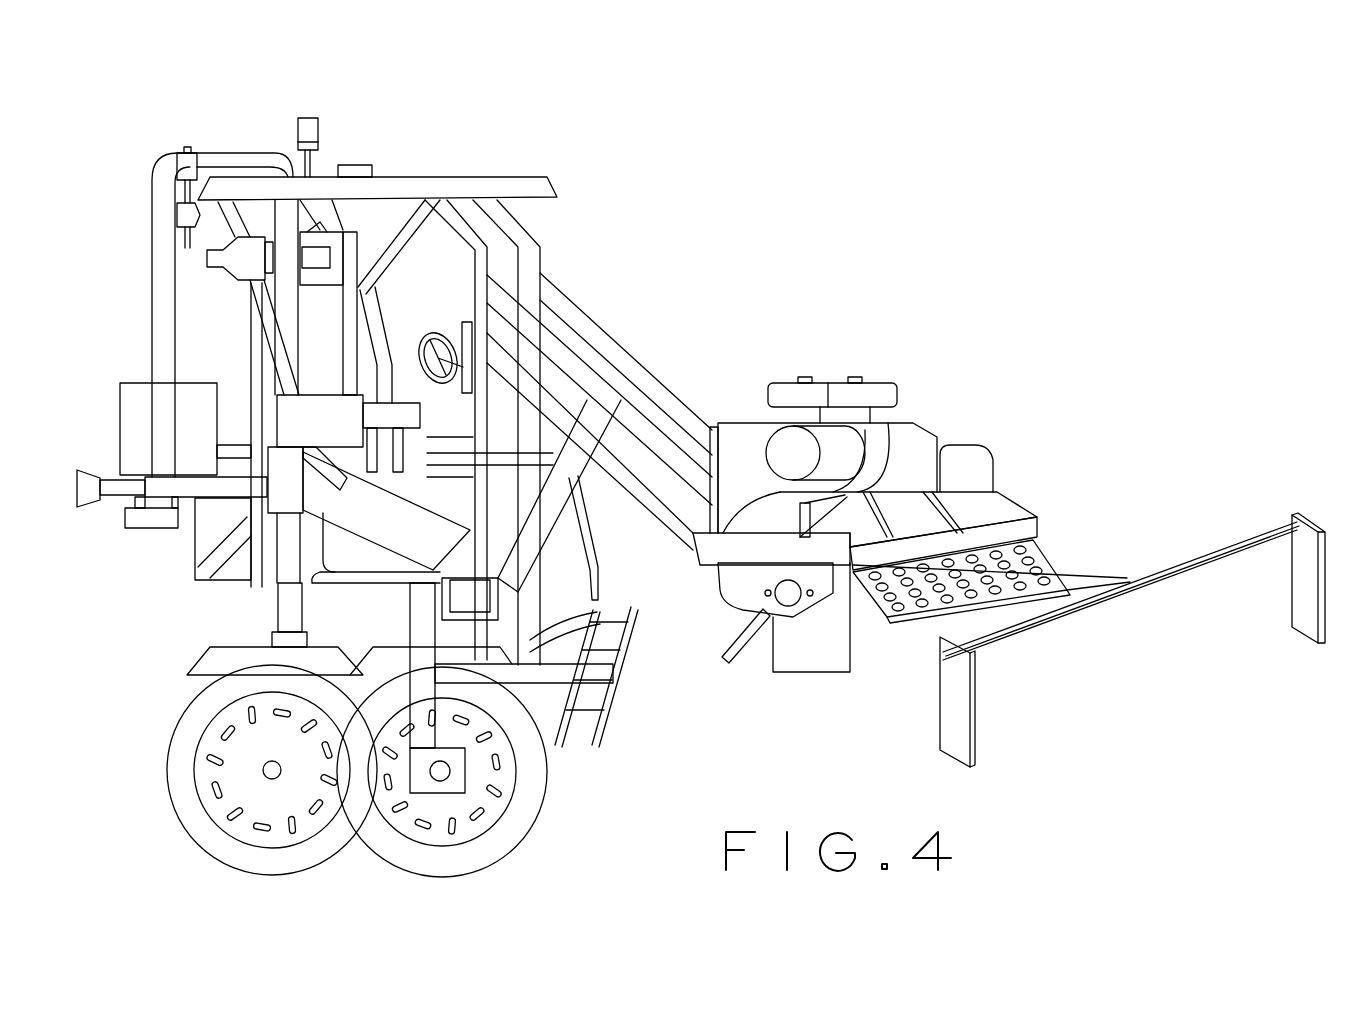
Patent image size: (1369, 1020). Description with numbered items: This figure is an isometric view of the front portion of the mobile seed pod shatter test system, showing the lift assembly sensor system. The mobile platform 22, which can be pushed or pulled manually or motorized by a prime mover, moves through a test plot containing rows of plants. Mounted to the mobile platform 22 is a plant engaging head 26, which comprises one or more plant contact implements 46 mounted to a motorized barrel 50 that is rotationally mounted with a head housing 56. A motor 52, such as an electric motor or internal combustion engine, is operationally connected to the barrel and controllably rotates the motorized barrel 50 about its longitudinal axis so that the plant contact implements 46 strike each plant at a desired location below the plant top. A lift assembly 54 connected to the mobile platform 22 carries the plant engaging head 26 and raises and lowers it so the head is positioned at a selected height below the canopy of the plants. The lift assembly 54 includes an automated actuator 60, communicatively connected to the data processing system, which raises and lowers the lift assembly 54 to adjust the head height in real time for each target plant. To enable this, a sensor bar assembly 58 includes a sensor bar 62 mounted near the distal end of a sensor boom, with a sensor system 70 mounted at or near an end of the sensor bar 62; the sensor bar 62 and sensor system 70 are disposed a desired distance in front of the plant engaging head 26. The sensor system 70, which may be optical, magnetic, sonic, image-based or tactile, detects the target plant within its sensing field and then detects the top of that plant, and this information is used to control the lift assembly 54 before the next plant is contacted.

The mobile platform 22 is at (254, 128).
The lift assembly 54 is at (656, 315).
The automated actuator 60 is at (577, 470).
The plant engaging head 26 is at (958, 405).
The motor 52 is at (785, 447).
The plant contact implements 46 is at (815, 530).
The motorized barrel 50 is at (788, 597).
The head housing 56 is at (997, 510).
The sensor bar assembly 58 is at (1148, 532).
The sensor bar 62 is at (1210, 570).
The sensor system 70 is at (1268, 645).